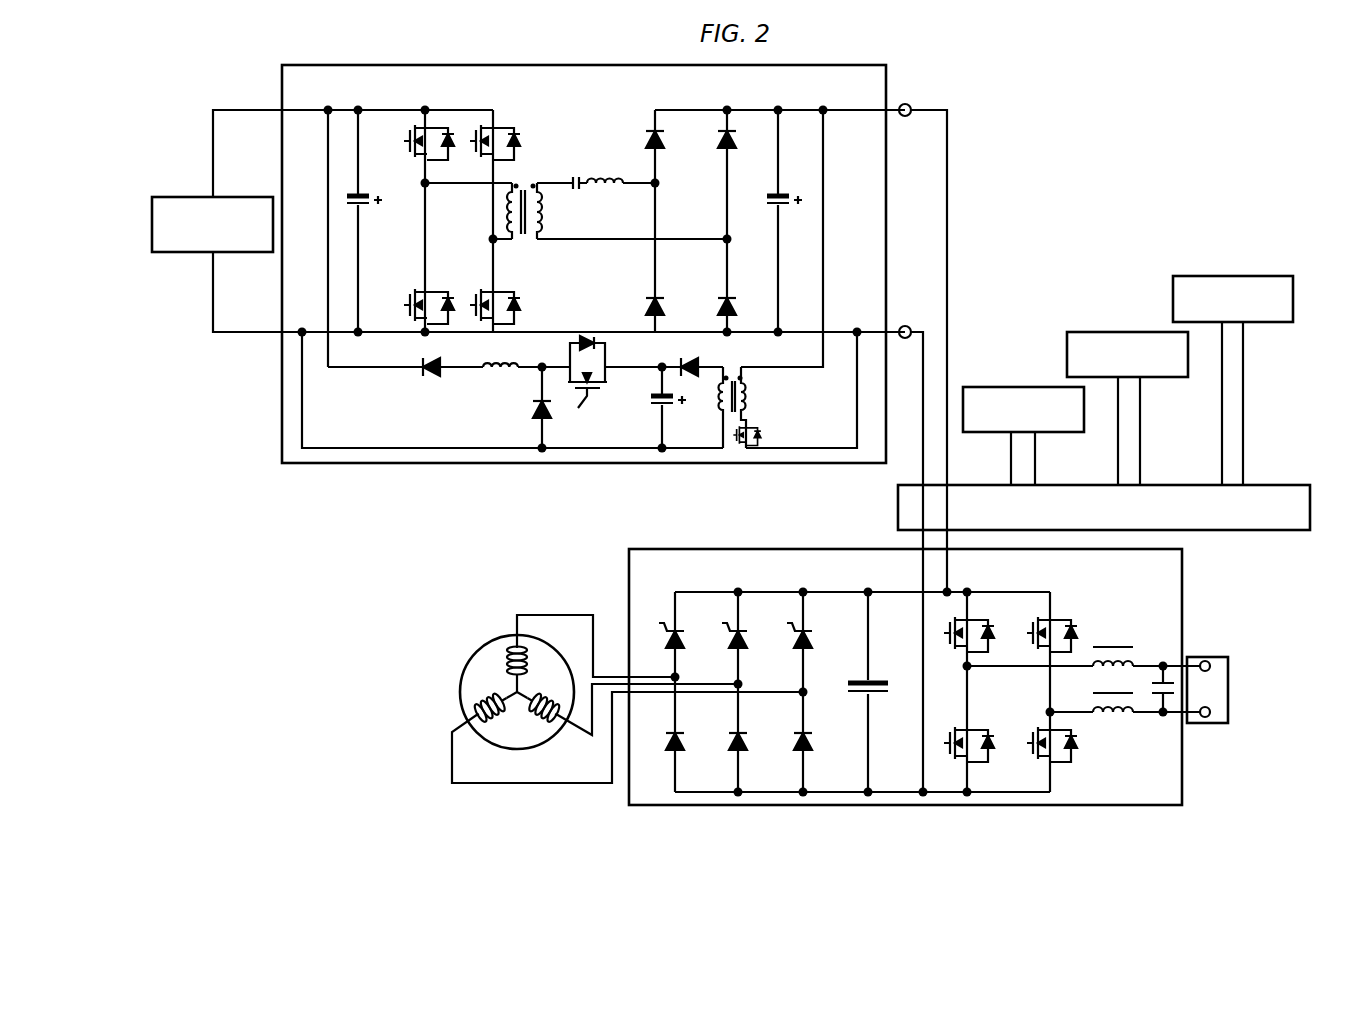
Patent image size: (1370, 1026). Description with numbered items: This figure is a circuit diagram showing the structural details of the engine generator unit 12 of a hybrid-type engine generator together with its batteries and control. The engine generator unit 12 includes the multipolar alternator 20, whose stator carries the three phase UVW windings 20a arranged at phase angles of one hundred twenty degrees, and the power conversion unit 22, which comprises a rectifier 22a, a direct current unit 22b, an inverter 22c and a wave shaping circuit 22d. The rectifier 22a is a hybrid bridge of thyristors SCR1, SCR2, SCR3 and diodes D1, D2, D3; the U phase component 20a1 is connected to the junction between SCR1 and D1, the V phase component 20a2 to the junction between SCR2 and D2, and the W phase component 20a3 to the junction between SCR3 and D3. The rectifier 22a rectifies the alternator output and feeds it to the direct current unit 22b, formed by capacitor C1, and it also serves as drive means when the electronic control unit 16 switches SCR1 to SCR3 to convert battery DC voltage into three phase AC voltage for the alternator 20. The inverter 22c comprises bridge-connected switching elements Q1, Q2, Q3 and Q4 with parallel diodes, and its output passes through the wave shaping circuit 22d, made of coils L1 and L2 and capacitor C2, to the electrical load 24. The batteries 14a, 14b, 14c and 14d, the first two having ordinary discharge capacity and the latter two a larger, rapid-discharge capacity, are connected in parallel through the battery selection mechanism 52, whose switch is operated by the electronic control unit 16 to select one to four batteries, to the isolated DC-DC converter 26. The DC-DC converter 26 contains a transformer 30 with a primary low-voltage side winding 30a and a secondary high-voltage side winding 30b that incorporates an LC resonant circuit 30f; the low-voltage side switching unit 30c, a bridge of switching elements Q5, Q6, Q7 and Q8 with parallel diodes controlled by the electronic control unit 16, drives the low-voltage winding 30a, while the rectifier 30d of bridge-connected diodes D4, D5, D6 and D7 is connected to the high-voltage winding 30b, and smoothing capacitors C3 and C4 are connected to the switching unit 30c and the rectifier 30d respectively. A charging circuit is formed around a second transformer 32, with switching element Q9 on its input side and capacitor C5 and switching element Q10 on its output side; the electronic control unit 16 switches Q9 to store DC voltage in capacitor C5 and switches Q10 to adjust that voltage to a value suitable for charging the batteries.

The engine generator unit 12 is at (592, 818).
The battery 14a is at (175, 197).
The battery 14b is at (990, 387).
The battery 14c is at (1092, 332).
The battery 14d is at (1200, 276).
The electronic control unit 16 is at (890, 507).
The alternator 20 is at (451, 725).
The UVW windings 20a is at (445, 687).
The U phase component 20a1 is at (500, 664).
The V phase component 20a2 is at (547, 720).
The W phase component 20a3 is at (492, 700).
The power conversion unit 22 is at (882, 735).
The rectifier 22a is at (726, 715).
The direct current unit 22b is at (870, 775).
The inverter 22c is at (1003, 730).
The wave shaping circuit 22d is at (1083, 744).
The load 24 is at (1215, 657).
The isolated DC-DC converter 26 is at (550, 65).
The transformer 30 is at (564, 226).
The low-voltage side winding 30a is at (512, 190).
The high-voltage side winding 30b is at (555, 240).
The low-voltage side switching unit 30c is at (464, 201).
The rectifier 30d is at (684, 201).
The LC resonant circuit 30f is at (600, 188).
The second transformer 32 is at (746, 400).
The battery selection mechanism 52 is at (1312, 503).
The capacitor C1 is at (880, 698).
The capacitor C2 is at (1160, 702).
The smoothing capacitor C3 is at (364, 206).
The smoothing capacitor C4 is at (786, 208).
The capacitor C5 is at (656, 406).
The diode D1 is at (668, 742).
The diode D2 is at (731, 742).
The diode D3 is at (789, 758).
The diode D4 is at (663, 145).
The diode D5 is at (733, 148).
The diode D6 is at (665, 308).
The diode D7 is at (736, 308).
The coil L1 is at (1102, 650).
The coil L2 is at (1101, 722).
The switching element Q1 is at (950, 645).
The switching element Q2 is at (1030, 634).
The switching element Q3 is at (950, 752).
The switching element Q4 is at (1073, 807).
The switching element Q5 is at (404, 141).
The switching element Q6 is at (470, 141).
The switching element Q7 is at (404, 305).
The switching element Q8 is at (470, 305).
The switching element Q9 is at (762, 436).
The switching element Q10 is at (581, 385).
The thyristor SCR1 is at (666, 638).
The thyristor SCR2 is at (733, 642).
The thyristor SCR3 is at (798, 642).